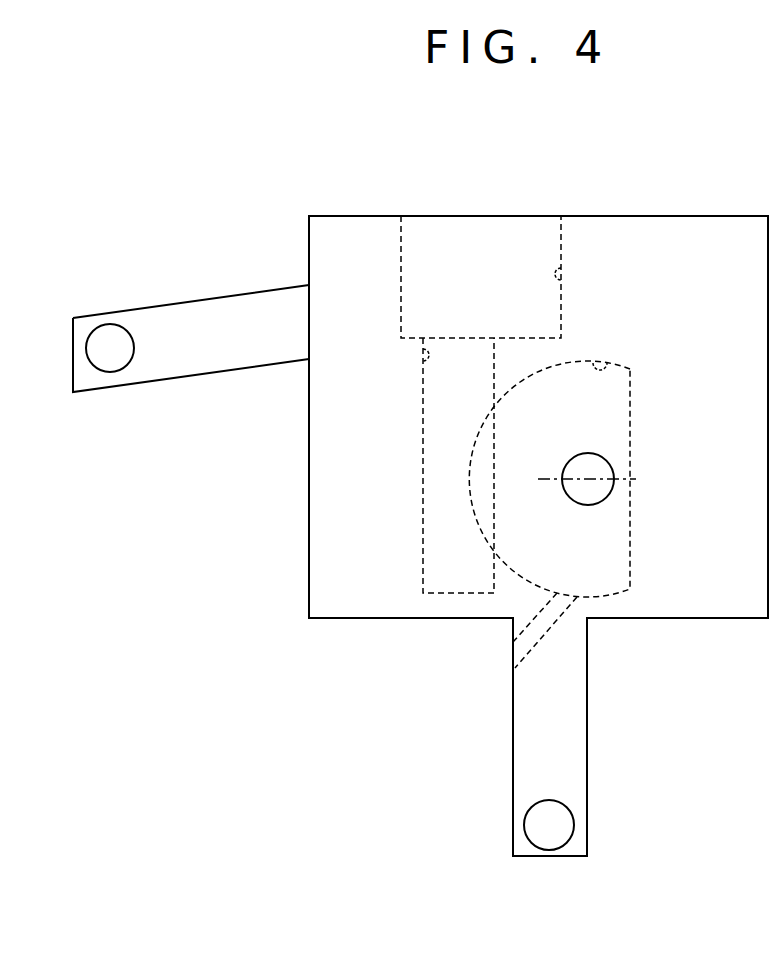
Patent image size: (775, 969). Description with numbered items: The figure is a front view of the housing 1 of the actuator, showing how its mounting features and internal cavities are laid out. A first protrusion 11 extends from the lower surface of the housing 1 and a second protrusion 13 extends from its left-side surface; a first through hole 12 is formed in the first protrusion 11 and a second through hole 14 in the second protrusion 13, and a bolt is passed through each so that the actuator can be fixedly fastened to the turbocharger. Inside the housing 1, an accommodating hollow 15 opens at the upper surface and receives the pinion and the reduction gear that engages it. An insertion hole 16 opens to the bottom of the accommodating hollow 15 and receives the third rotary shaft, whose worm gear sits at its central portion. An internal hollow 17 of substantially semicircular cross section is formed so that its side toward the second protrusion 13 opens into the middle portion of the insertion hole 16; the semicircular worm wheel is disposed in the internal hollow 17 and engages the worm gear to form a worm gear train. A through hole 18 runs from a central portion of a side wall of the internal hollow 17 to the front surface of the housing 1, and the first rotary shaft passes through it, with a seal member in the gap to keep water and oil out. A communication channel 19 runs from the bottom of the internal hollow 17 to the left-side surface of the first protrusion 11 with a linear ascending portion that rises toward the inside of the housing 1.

The housing 1 is at (722, 778).
The first protrusion 11 is at (587, 767).
The first through hole 12 is at (566, 822).
The second protrusion 13 is at (233, 369).
The second through hole 14 is at (110, 364).
The accommodating hollow 15 is at (566, 276).
The insertion hole 16 is at (421, 358).
The internal hollow 17 is at (603, 360).
The through hole 18 is at (586, 453).
The communication channel 19 is at (526, 651).